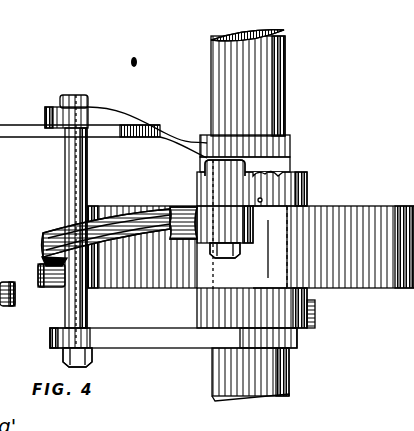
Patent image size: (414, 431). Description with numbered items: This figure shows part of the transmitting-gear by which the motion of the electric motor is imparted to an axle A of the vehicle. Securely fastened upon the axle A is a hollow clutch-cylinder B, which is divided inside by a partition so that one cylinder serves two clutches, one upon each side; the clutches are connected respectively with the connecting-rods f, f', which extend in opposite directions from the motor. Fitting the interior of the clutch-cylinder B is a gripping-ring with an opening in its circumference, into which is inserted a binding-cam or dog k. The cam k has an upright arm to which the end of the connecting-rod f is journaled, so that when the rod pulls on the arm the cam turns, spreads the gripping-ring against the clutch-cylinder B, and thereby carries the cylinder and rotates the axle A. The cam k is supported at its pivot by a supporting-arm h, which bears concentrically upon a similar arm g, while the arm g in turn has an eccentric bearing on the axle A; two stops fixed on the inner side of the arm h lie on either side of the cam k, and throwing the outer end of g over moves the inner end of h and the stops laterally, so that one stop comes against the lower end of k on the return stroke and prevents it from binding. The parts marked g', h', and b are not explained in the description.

The axle A is at (252, 200).
The clutch-cylinder B is at (362, 290).
The connecting-rod f is at (98, 279).
The connecting-rod f' is at (52, 287).
The arm g is at (173, 357).
The upper clamp plate g' is at (103, 224).
The supporting-arm h is at (199, 222).
The clamp nut h' is at (323, 325).
The binding-cam k is at (200, 203).
The bracket b is at (125, 424).